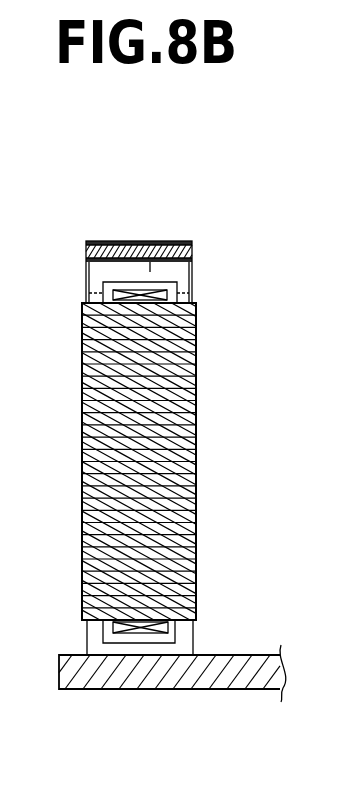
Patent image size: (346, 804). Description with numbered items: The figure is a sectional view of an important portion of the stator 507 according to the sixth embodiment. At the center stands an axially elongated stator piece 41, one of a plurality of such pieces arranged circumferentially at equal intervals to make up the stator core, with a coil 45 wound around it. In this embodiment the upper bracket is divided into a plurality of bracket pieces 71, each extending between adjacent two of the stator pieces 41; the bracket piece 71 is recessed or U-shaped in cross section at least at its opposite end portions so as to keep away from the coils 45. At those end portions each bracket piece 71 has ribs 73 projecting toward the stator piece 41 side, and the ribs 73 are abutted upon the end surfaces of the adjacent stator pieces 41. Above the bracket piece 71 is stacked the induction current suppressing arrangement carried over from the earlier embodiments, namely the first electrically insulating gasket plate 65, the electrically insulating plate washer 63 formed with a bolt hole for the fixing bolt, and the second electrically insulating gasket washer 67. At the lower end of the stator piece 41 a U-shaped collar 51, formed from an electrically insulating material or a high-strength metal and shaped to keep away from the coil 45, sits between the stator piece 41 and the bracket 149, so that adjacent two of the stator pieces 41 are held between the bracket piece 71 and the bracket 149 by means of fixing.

The stator 507 is at (224, 165).
The electrically insulating plate washer 63 is at (193, 250).
The first electrically insulating gasket plate 65 is at (107, 240).
The second electrically insulating gasket washer 67 is at (132, 240).
The bracket piece 71 is at (165, 240).
The coil 45 is at (143, 292).
The rib 73 is at (188, 300).
The stator piece 41 is at (157, 478).
The U-shaped collar 51 is at (183, 643).
The bracket 149 is at (208, 658).